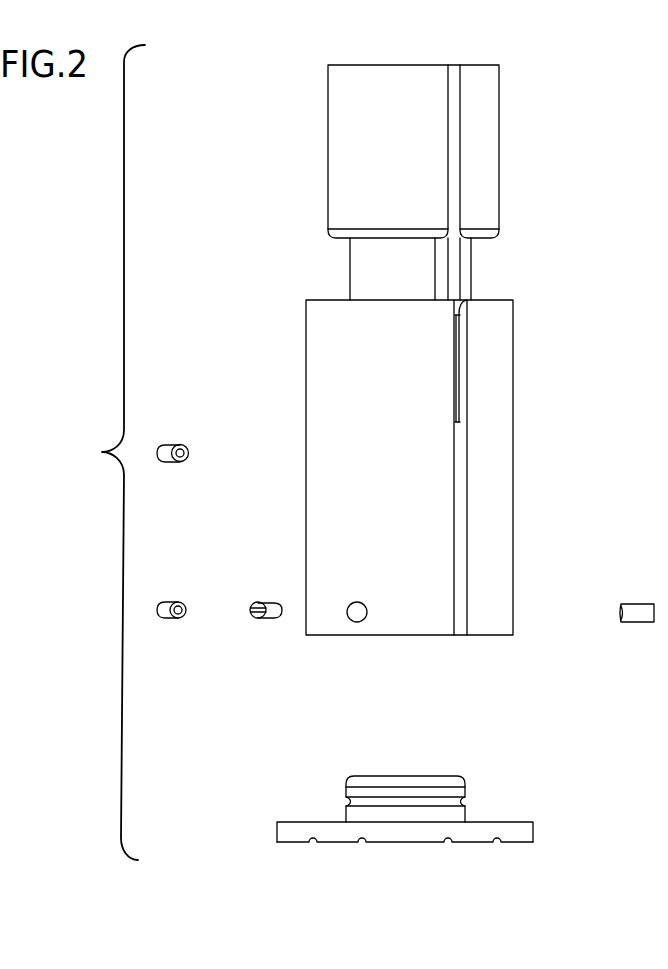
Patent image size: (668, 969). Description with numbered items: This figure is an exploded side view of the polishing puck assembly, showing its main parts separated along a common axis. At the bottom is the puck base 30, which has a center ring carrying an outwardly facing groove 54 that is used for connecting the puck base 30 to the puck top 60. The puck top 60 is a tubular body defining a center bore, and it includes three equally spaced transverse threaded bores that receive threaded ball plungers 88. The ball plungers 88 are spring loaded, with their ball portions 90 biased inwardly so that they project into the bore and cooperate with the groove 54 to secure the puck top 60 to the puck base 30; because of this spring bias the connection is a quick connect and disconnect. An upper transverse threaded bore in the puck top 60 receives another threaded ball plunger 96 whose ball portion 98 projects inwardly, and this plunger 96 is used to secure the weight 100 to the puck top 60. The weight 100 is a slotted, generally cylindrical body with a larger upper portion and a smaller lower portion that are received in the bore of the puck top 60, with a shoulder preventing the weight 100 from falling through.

The puck base 30 is at (533, 828).
The outwardly facing groove 54 is at (403, 797).
The puck top 60 is at (513, 468).
The threaded ball plungers 88 is at (170, 602).
The ball portions 90 is at (182, 616).
The threaded ball plunger 96 is at (172, 445).
The ball portion 98 is at (185, 458).
The weight 100 is at (497, 147).